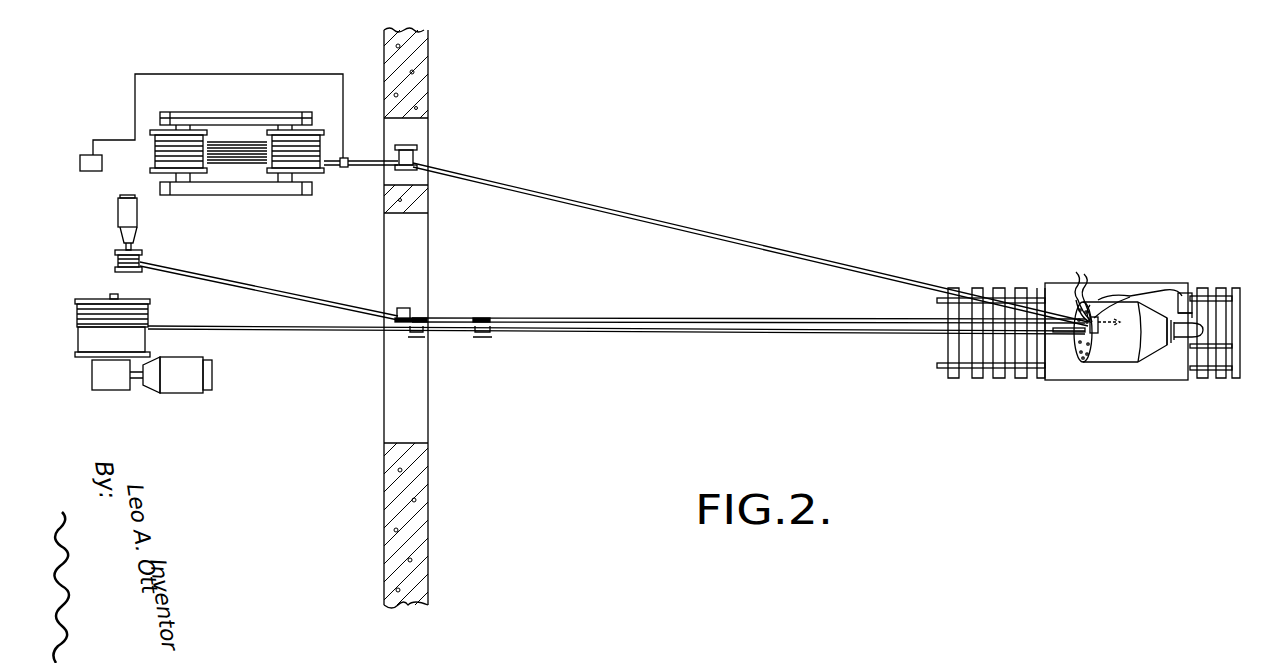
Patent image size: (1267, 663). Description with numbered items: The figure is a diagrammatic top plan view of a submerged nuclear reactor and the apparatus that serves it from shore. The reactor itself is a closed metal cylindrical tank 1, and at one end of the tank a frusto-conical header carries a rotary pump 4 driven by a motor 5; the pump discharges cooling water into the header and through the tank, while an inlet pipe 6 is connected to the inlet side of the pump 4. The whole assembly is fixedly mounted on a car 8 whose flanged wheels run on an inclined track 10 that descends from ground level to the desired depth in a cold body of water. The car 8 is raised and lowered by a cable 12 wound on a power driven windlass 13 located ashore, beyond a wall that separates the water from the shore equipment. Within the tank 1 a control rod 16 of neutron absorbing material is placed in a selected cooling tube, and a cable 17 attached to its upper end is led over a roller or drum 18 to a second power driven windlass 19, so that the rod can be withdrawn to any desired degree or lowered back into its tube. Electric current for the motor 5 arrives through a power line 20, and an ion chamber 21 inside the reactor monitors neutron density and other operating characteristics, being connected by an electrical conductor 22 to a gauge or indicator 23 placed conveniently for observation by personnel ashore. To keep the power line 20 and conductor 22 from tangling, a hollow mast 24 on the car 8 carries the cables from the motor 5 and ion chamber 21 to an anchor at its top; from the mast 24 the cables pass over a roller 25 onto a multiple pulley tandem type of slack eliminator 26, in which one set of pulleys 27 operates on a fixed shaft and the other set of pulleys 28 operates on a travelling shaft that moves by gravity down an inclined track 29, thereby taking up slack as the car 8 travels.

The metal cylindrical tank 1 is at (1110, 350).
The rotary pump 4 is at (1203, 330).
The motor 5 is at (1190, 293).
The inlet pipe 6 is at (1228, 350).
The car 8 is at (1148, 378).
The inclined track 10 is at (960, 368).
The cable 12 is at (688, 336).
The power driven windlass 13 is at (77, 318).
The control rod 16 is at (1110, 326).
The cable 17 is at (740, 318).
The roller or drum 18 is at (410, 308).
The power driven windlass 19 is at (142, 256).
The power line 20 is at (818, 263).
The ion chamber 21 is at (1110, 306).
The electrical conductor 22 is at (762, 244).
The gauge or indicator 23 is at (93, 172).
The hollow mast 24 is at (1092, 316).
The roller 25 is at (410, 144).
The slack eliminator 26 is at (270, 110).
The set of pulleys 27 is at (287, 158).
The set of pulleys 28 is at (151, 158).
The inclined track 29 is at (220, 112).